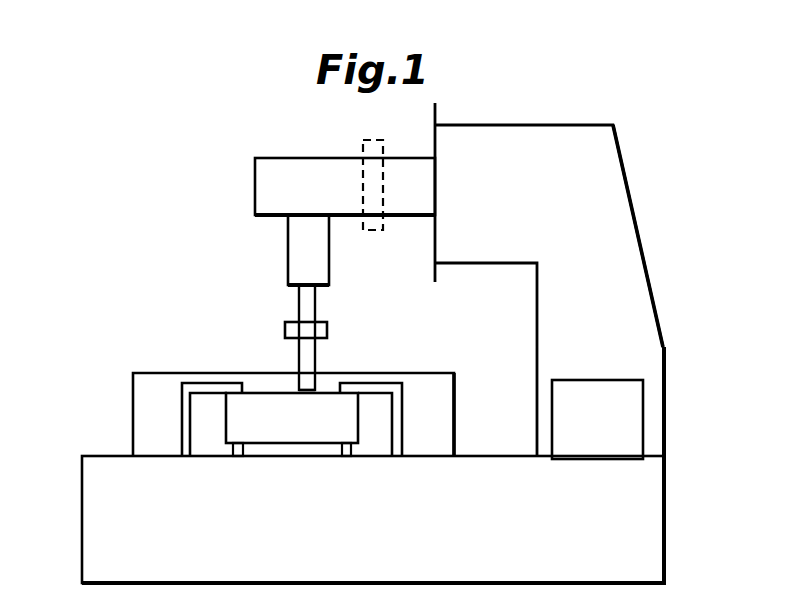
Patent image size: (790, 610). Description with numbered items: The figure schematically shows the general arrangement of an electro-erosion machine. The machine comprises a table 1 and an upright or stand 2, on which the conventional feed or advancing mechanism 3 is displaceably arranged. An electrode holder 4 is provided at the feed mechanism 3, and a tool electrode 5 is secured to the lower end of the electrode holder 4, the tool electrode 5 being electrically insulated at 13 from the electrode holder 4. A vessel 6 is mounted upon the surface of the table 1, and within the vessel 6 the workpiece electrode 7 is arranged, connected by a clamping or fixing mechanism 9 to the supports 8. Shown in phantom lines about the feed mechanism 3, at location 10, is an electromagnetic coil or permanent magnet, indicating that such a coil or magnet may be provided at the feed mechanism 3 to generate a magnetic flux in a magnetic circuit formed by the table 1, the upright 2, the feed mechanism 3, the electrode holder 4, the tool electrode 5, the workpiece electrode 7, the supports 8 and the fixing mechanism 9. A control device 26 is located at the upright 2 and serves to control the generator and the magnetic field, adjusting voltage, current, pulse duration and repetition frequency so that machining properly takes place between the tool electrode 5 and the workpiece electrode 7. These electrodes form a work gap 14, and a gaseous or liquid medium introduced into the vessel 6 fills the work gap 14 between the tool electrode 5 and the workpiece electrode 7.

The table 1 is at (93, 520).
The upright or stand 2 is at (533, 137).
The feed or advancing mechanism 3 is at (262, 185).
The electrode holder 4 is at (298, 253).
The tool electrode 5 is at (305, 307).
The vessel 6 is at (143, 393).
The workpiece electrode 7 is at (251, 395).
The supports 8 is at (345, 458).
The clamping or fixing mechanism 9 is at (182, 420).
The electromagnetic coil or permanent magnet 10 is at (367, 262).
The electrical insulation 13 is at (290, 285).
The work gap 14 is at (313, 395).
The control device 26 is at (565, 402).